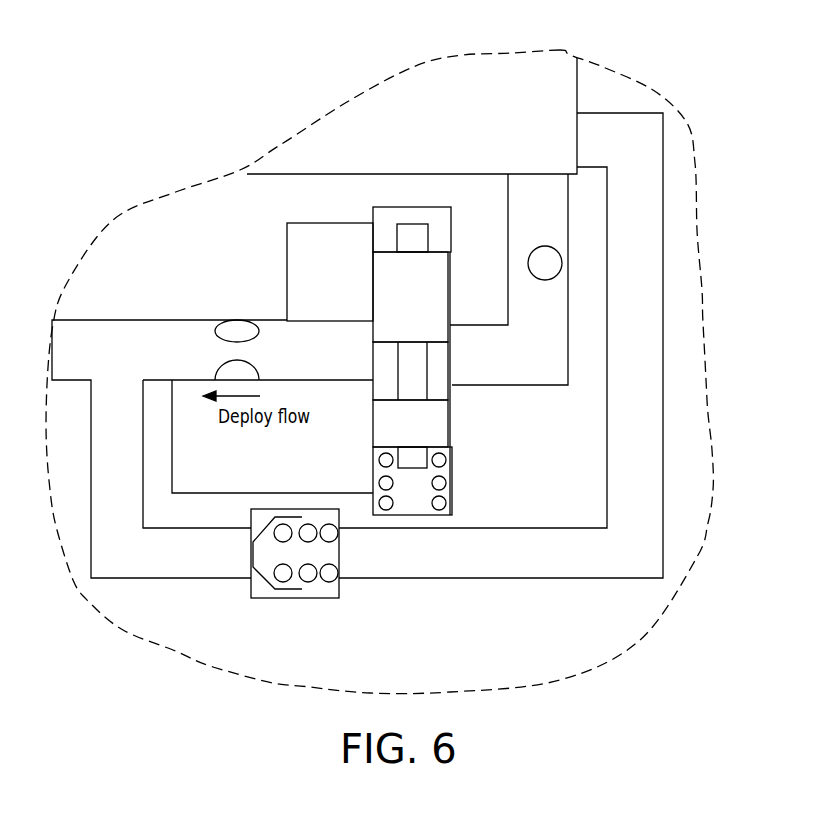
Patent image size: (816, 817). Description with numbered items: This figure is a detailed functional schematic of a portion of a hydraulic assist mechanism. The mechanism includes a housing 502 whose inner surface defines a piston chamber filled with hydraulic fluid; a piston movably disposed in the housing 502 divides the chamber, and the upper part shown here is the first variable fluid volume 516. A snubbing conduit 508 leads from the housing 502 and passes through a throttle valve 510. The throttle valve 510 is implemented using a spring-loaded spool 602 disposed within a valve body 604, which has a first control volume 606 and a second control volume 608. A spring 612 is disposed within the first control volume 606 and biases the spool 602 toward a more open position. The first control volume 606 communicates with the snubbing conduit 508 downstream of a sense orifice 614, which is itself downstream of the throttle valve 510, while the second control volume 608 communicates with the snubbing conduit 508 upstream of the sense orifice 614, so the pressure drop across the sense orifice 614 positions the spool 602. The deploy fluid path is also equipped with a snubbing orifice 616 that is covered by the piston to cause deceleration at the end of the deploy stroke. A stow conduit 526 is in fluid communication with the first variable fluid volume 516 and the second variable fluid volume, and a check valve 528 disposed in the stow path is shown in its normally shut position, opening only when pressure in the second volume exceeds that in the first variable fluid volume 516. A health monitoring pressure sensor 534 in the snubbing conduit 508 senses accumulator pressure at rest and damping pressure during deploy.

The housing 502 is at (577, 83).
The first variable fluid volume 516 is at (458, 101).
The snubbing orifice 616 is at (537, 175).
The stow conduit 526 is at (650, 403).
The snubbing conduit 508 is at (520, 205).
The health monitoring pressure sensor 534 is at (563, 263).
The throttle valve 510 is at (252, 249).
The sense orifice 614 is at (237, 331).
The valve body 604 is at (372, 233).
The second control volume 608 is at (408, 210).
The spool 602 is at (384, 281).
The first control volume 606 is at (408, 495).
The spring 612 is at (447, 502).
The check valve 528 is at (283, 598).